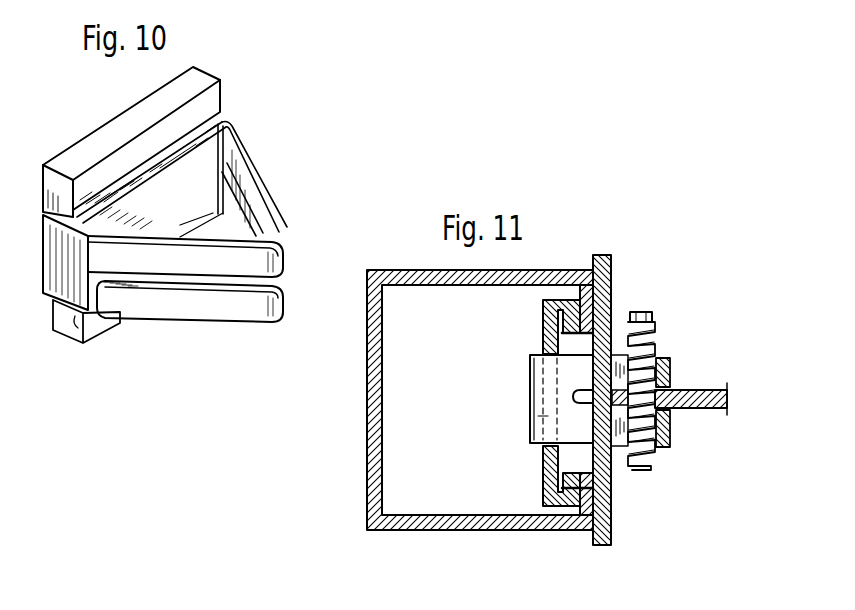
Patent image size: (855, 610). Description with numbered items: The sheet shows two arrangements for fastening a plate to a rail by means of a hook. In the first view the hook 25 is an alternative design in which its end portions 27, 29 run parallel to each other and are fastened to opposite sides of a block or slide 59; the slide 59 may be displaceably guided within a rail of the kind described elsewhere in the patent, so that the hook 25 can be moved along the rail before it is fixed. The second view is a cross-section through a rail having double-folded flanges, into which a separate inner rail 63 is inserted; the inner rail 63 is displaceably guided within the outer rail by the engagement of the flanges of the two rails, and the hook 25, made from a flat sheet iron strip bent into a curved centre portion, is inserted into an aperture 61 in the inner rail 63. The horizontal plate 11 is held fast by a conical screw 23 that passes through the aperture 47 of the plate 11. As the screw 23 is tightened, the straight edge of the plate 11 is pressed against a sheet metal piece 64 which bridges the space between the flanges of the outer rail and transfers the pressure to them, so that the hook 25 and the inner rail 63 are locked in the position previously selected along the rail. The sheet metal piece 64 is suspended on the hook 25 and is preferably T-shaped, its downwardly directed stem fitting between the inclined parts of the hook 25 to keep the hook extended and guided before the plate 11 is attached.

In FIG. 10, the block or slide 59 is at (113, 128).
In FIG. 10, the end portion 29 is at (227, 127).
In FIG. 10, the hook 25 is at (163, 308).
In FIG. 11, the hook 25 is at (627, 438).
In FIG. 10, the end portion 27 is at (68, 284).
In FIG. 11, the sheet metal piece 64 is at (614, 268).
In FIG. 11, the inner rail 63 is at (545, 330).
In FIG. 11, the aperture 61 is at (531, 428).
In FIG. 11, the horizontal plate 11 is at (707, 390).
In FIG. 11, the aperture 47 is at (676, 400).
In FIG. 11, the screw 23 is at (652, 340).